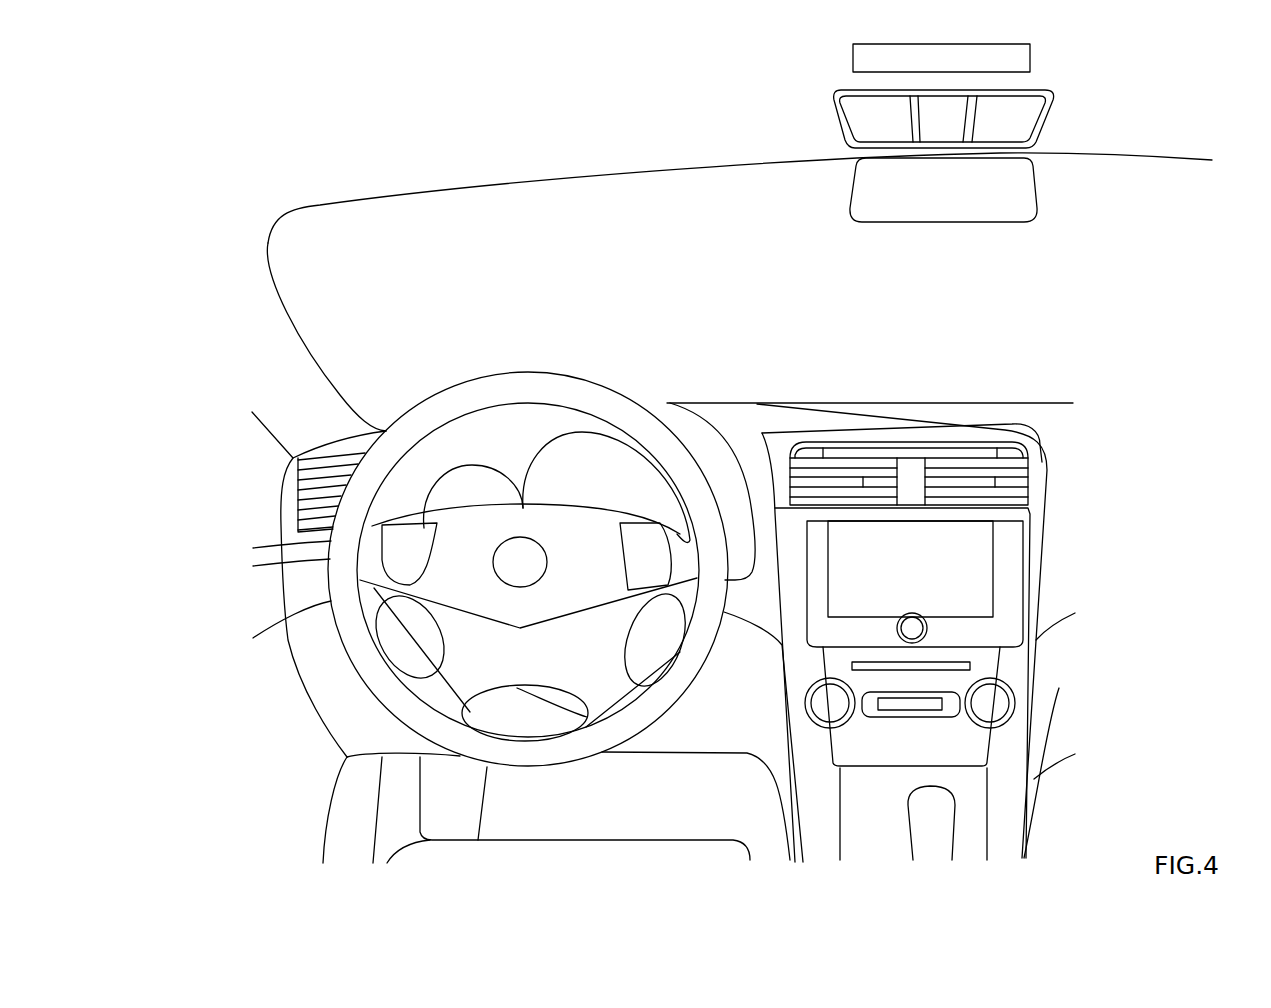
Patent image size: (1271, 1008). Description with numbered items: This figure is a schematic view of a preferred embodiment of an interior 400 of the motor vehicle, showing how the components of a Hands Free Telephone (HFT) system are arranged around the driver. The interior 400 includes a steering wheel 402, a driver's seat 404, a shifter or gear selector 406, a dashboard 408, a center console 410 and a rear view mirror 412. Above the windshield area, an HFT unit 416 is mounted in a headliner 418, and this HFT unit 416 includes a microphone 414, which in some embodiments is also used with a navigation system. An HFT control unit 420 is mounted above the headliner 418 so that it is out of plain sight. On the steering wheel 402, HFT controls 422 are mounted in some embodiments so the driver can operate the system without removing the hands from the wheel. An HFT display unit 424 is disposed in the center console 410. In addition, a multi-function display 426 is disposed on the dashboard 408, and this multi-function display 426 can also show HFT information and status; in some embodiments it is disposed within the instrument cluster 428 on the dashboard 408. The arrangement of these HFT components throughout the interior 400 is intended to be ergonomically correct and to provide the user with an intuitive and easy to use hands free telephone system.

The interior 400 is at (246, 226).
The steering wheel 402 is at (482, 397).
The driver's seat 404 is at (642, 797).
The shifter or gear selector 406 is at (927, 825).
The dashboard 408 is at (707, 435).
The center console 410 is at (1028, 545).
The rear view mirror 412 is at (1003, 222).
The microphone 414 is at (855, 118).
The Hands Free Telephone (HFT) unit 416 is at (1048, 124).
The headliner 418 is at (568, 115).
The HFT control unit 420 is at (857, 60).
The HFT controls 422 is at (422, 631).
The HFT display unit 424 is at (960, 452).
The multi-function display 426 is at (658, 508).
The instrument cluster 428 is at (523, 433).